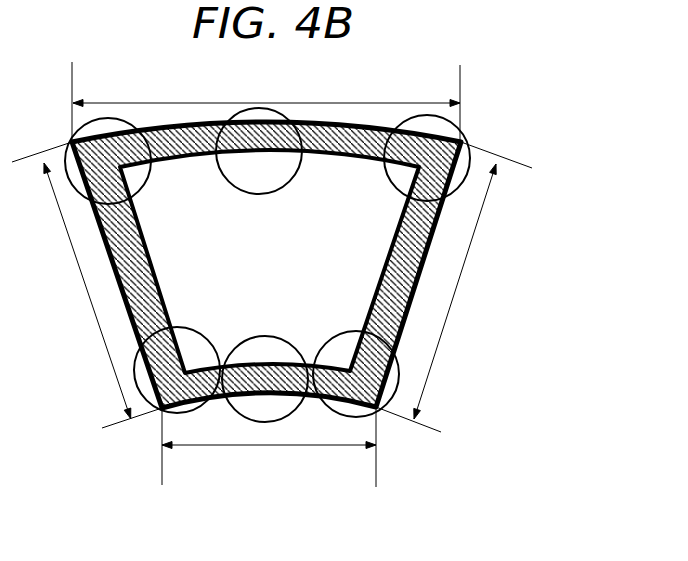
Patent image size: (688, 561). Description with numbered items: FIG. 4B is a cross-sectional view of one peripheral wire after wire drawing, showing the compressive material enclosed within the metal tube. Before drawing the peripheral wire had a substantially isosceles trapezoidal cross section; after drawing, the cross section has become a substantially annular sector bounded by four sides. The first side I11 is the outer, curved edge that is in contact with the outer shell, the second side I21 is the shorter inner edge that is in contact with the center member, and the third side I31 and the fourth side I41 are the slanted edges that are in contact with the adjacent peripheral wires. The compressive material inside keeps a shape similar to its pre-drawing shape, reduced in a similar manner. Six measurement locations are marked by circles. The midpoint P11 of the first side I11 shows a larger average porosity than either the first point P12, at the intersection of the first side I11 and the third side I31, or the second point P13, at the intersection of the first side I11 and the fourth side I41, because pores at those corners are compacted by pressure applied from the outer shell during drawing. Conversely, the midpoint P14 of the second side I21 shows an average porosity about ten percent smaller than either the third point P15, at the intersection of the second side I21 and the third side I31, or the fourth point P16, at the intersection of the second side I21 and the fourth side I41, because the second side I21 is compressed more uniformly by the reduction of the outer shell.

The midpoint of the first side P11 is at (263, 195).
The first point P12 is at (143, 197).
The second point P13 is at (400, 200).
The midpoint of the second side P14 is at (260, 331).
The third point P15 is at (200, 305).
The fourth point P16 is at (362, 330).
The first side I11 is at (266, 103).
The second side I21 is at (269, 449).
The third side I31 is at (87, 285).
The fourth side I41 is at (454, 287).